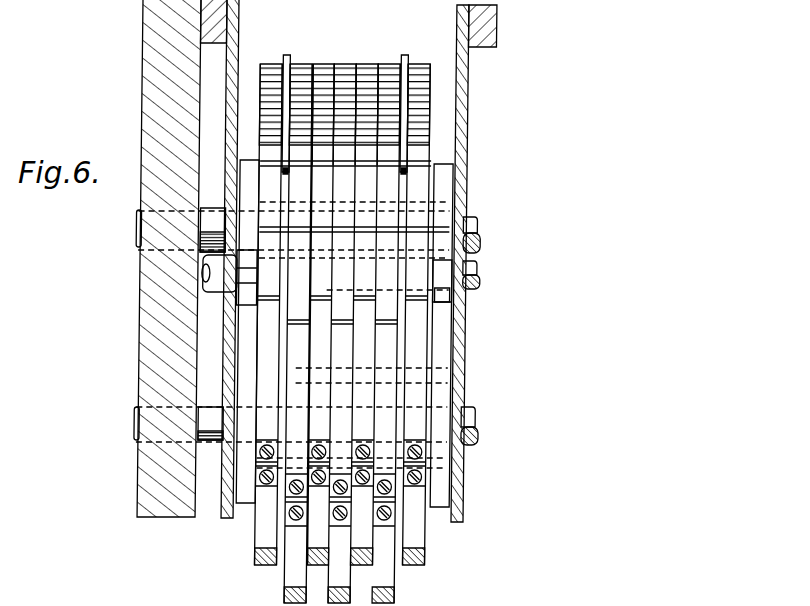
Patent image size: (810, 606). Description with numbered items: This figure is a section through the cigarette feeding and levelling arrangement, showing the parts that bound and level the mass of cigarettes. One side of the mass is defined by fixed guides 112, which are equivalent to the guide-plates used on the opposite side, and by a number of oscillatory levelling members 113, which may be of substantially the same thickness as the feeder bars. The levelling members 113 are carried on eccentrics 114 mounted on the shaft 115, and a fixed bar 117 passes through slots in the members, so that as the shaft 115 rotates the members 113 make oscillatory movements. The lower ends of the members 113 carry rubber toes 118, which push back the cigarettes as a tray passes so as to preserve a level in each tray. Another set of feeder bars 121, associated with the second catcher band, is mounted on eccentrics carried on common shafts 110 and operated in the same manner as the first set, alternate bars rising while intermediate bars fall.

The common shafts 110 is at (336, 598).
The fixed guides 112 is at (287, 335).
The oscillatory levelling members 113 is at (384, 378).
The eccentrics 114 is at (391, 492).
The shaft 115 is at (472, 415).
The fixed bar 117 is at (485, 268).
The rubber toes 118 is at (332, 590).
The feeder bars 121 is at (394, 176).